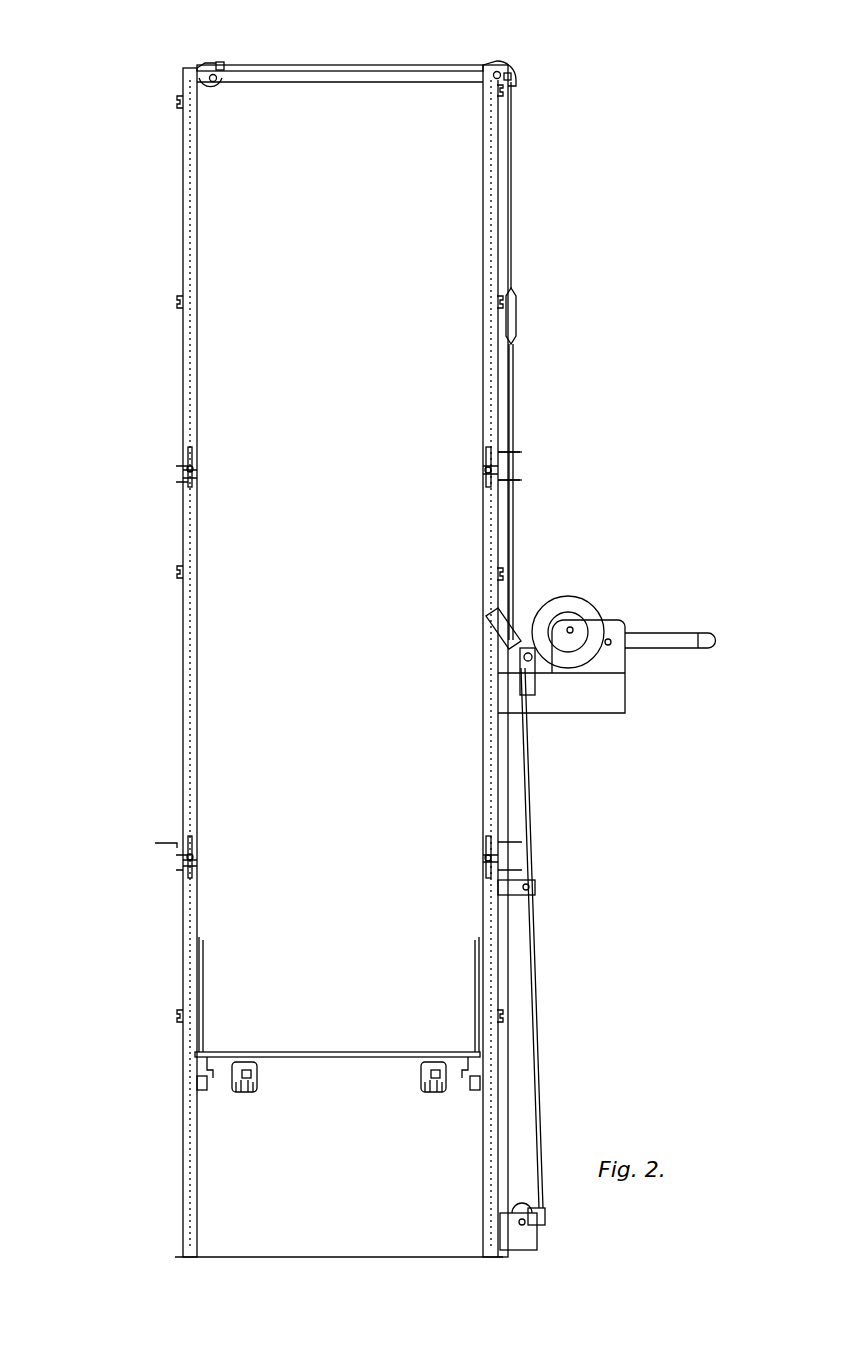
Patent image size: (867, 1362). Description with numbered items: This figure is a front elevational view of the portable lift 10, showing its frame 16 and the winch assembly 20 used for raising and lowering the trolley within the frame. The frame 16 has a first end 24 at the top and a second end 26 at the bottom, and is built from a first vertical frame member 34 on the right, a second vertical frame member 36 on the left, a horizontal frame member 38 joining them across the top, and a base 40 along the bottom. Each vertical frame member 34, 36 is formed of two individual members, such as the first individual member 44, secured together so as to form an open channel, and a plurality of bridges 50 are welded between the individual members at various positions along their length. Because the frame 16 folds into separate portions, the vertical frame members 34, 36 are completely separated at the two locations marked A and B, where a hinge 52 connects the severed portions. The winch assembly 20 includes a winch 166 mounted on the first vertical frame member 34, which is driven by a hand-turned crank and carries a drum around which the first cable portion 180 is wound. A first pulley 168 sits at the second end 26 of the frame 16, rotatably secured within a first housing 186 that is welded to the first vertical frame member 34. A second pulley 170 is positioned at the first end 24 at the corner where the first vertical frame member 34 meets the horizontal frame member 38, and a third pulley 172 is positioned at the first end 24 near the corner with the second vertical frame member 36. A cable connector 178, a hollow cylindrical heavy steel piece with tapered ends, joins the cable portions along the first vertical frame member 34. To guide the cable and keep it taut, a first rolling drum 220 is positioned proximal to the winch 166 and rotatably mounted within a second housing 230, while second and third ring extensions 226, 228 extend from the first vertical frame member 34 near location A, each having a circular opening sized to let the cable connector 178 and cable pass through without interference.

The portable lift 10 is at (130, 124).
The frame 16 is at (182, 232).
The winch assembly 20 is at (595, 590).
The first end 24 is at (423, 55).
The second end 26 is at (315, 1262).
The first vertical frame member 34 is at (505, 540).
The second vertical frame member 36 is at (178, 648).
The horizontal frame member 38 is at (265, 76).
The base 40 is at (408, 1258).
The first individual member 44 is at (190, 358).
The bridge 50 is at (185, 455).
The hinge 52 is at (192, 475).
The winch 166 is at (612, 630).
The first pulley 168 is at (545, 1228).
The second pulley 170 is at (500, 62).
The third pulley 172 is at (206, 62).
The cable connector 178 is at (513, 313).
The first cable portion 180 is at (537, 1105).
The first housing 186 is at (525, 1242).
The first rolling drum 220 is at (545, 660).
The second ring extension 226 is at (515, 452).
The third ring extension 228 is at (515, 480).
The second housing 230 is at (487, 622).